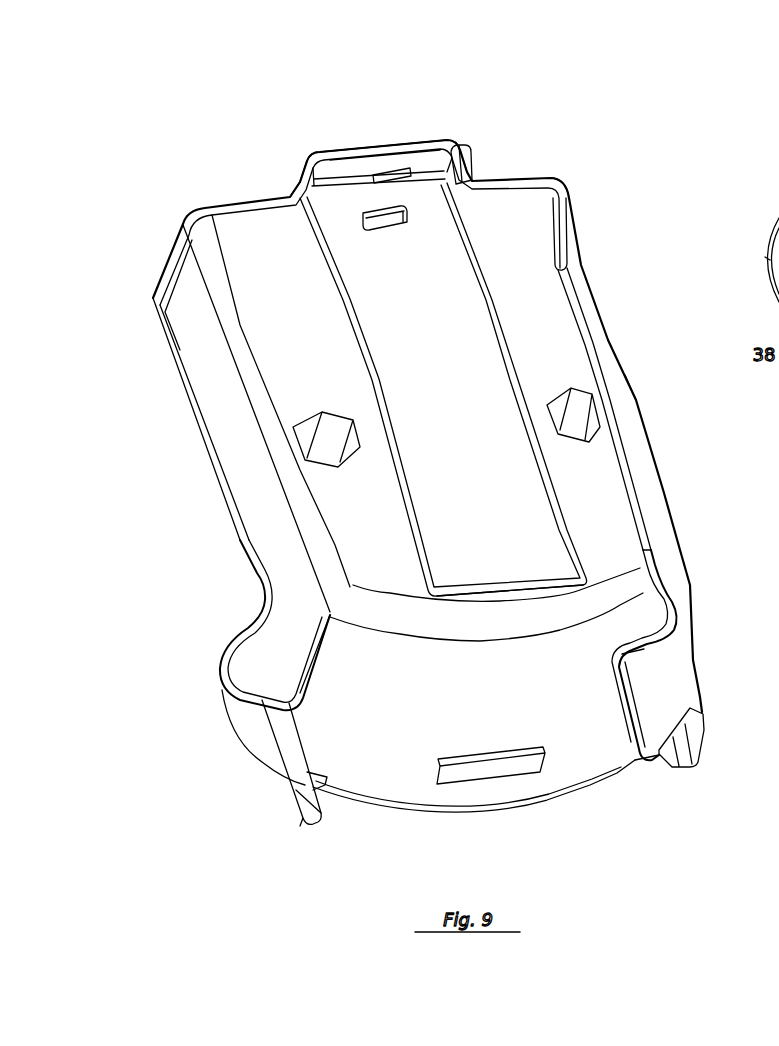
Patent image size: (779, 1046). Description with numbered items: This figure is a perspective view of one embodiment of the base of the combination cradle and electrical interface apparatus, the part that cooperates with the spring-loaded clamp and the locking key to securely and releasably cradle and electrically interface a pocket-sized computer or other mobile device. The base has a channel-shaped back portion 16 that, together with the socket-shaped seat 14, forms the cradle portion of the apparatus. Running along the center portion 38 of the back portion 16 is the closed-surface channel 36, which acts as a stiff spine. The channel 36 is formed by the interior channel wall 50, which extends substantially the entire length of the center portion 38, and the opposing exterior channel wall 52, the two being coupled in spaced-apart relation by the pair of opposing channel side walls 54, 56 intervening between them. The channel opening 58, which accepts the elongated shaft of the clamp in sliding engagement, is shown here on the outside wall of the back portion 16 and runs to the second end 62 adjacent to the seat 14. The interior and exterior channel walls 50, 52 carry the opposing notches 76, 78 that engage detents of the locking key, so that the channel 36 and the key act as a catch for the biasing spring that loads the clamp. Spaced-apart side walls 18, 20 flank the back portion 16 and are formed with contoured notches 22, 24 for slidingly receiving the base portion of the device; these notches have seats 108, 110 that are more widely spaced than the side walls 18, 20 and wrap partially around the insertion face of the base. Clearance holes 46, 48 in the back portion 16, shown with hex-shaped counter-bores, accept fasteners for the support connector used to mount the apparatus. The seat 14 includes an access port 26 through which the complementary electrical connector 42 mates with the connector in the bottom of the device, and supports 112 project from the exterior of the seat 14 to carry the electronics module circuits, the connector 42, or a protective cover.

The seat 14 is at (439, 716).
The back portion 16 is at (557, 180).
The side wall 18 is at (225, 425).
The side wall 20 is at (590, 297).
The notch 22 is at (250, 665).
The notch 24 is at (652, 620).
The access port 26 is at (483, 785).
The closed-surface channel 36 is at (390, 160).
The center portion 38 is at (510, 228).
The electrical connector 42 is at (628, 362).
The clearance hole 46 is at (307, 462).
The clearance hole 48 is at (580, 392).
The interior channel wall 50 is at (397, 322).
The exterior channel wall 52 is at (332, 153).
The channel side wall 54 is at (300, 180).
The channel side wall 56 is at (480, 172).
The channel opening 58 is at (342, 154).
The second end 62 is at (485, 575).
The notch 76 is at (372, 250).
The notch 78 is at (392, 167).
The seat 108 is at (262, 675).
The seat 110 is at (632, 638).
The support 112 is at (700, 710).